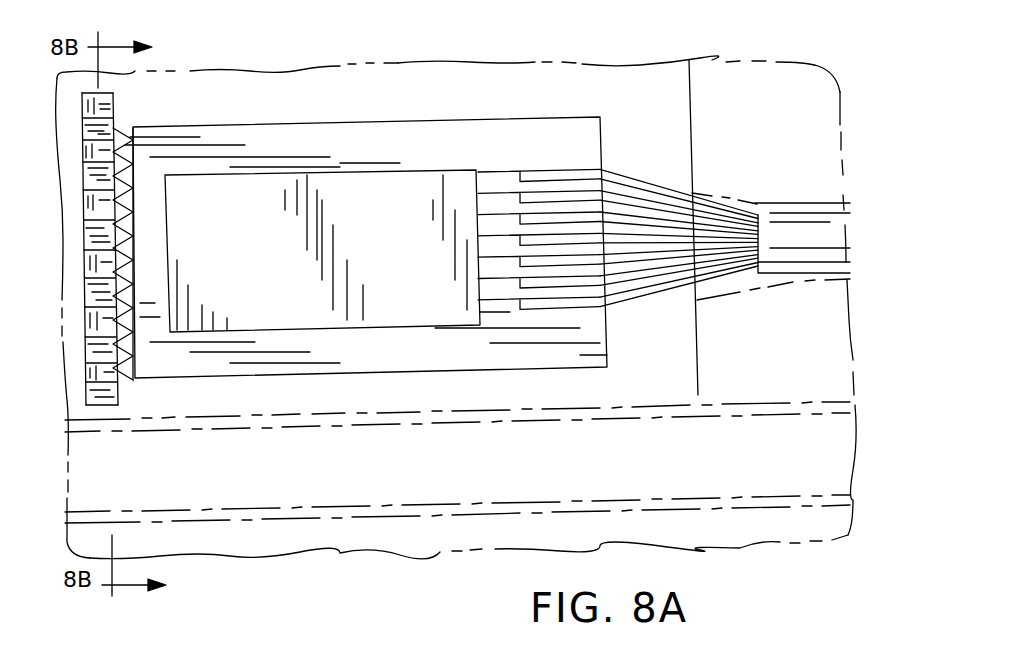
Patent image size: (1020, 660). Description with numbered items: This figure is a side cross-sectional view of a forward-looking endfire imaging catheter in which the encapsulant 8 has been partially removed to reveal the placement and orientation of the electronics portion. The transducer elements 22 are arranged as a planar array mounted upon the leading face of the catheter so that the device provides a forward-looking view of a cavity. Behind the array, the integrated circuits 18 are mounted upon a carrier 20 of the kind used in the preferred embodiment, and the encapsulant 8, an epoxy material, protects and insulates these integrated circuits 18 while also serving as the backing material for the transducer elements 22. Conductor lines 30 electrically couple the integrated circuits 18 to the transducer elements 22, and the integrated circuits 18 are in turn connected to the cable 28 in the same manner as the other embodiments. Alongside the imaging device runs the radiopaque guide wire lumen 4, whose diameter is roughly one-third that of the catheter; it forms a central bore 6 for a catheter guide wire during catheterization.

The guide wire lumen 4 is at (360, 428).
The central bore 6 is at (485, 484).
The encapsulant 8 is at (453, 83).
The integrated circuits 18 is at (408, 246).
The carrier 20 is at (492, 151).
The transducer elements 22 is at (112, 100).
The cable 28 is at (783, 225).
The conductor lines 30 is at (125, 128).